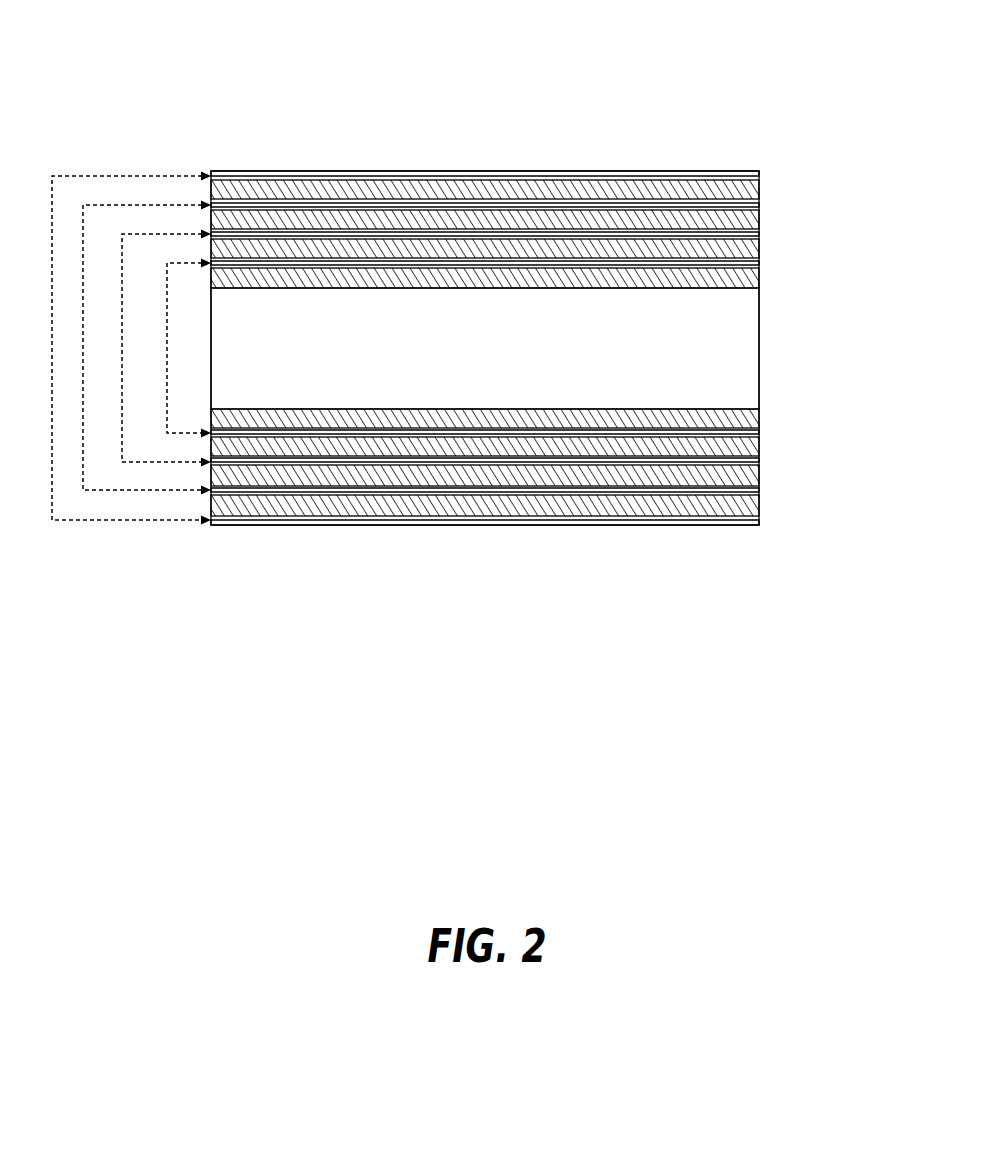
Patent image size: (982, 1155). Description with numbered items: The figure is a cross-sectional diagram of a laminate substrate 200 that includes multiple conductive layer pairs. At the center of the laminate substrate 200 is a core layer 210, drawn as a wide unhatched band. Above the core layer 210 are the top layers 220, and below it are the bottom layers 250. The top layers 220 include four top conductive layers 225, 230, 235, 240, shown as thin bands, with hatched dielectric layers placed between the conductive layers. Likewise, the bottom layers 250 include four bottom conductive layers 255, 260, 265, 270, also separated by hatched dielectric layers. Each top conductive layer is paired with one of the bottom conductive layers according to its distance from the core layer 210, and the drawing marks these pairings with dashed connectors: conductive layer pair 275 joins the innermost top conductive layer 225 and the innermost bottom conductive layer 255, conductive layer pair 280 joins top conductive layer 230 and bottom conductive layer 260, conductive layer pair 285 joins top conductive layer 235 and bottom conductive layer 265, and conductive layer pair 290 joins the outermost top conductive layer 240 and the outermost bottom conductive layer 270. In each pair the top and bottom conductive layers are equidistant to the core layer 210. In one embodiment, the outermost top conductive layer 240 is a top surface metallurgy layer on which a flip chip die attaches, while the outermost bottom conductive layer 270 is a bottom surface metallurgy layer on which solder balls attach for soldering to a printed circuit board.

The laminate substrate 200 is at (264, 64).
The core layer 210 is at (470, 369).
The top layers 220 is at (815, 273).
The top conductive layer 225 is at (759, 263).
The top conductive layer 230 is at (759, 234).
The top conductive layer 235 is at (759, 205).
The top conductive layer 240 is at (759, 174).
The bottom layers 250 is at (815, 525).
The bottom conductive layer 255 is at (759, 432).
The bottom conductive layer 260 is at (759, 460).
The bottom conductive layer 265 is at (759, 490).
The bottom conductive layer 270 is at (759, 522).
The conductive layer pair 275 is at (179, 263).
The conductive layer pair 280 is at (141, 234).
The conductive layer pair 285 is at (108, 205).
The conductive layer pair 290 is at (78, 176).